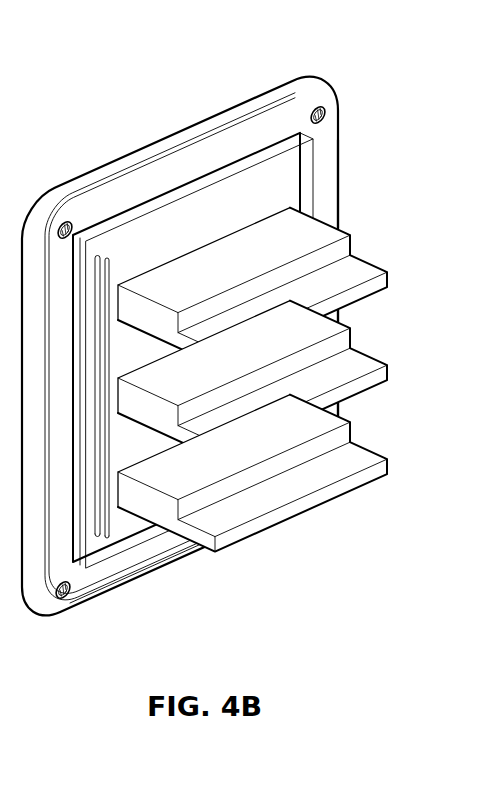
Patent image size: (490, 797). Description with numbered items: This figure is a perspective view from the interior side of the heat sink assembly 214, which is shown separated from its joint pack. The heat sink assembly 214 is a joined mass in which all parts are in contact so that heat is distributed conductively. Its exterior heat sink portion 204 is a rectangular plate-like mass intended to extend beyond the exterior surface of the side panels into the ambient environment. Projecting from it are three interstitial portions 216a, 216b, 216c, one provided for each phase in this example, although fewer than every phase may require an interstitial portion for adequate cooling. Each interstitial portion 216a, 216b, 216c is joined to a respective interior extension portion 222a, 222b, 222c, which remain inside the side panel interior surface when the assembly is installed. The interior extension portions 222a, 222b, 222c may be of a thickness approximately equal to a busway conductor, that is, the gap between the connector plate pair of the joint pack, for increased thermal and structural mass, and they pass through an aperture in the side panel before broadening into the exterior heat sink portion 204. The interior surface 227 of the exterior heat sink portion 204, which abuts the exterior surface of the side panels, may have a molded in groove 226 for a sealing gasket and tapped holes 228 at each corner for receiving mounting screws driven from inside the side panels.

The heat sink assembly 214 is at (251, 349).
The exterior heat sink portion 204 is at (223, 361).
The interstitial portion 216a is at (387, 280).
The interstitial portion 216b is at (387, 375).
The interstitial portion 216c is at (387, 468).
The interior extension portion 222a is at (312, 240).
The interior extension portion 222b is at (312, 335).
The interior extension portion 222c is at (312, 430).
The molded in groove 226 is at (312, 147).
The interior surface 227 is at (128, 568).
The tapped holes 228 is at (325, 106).